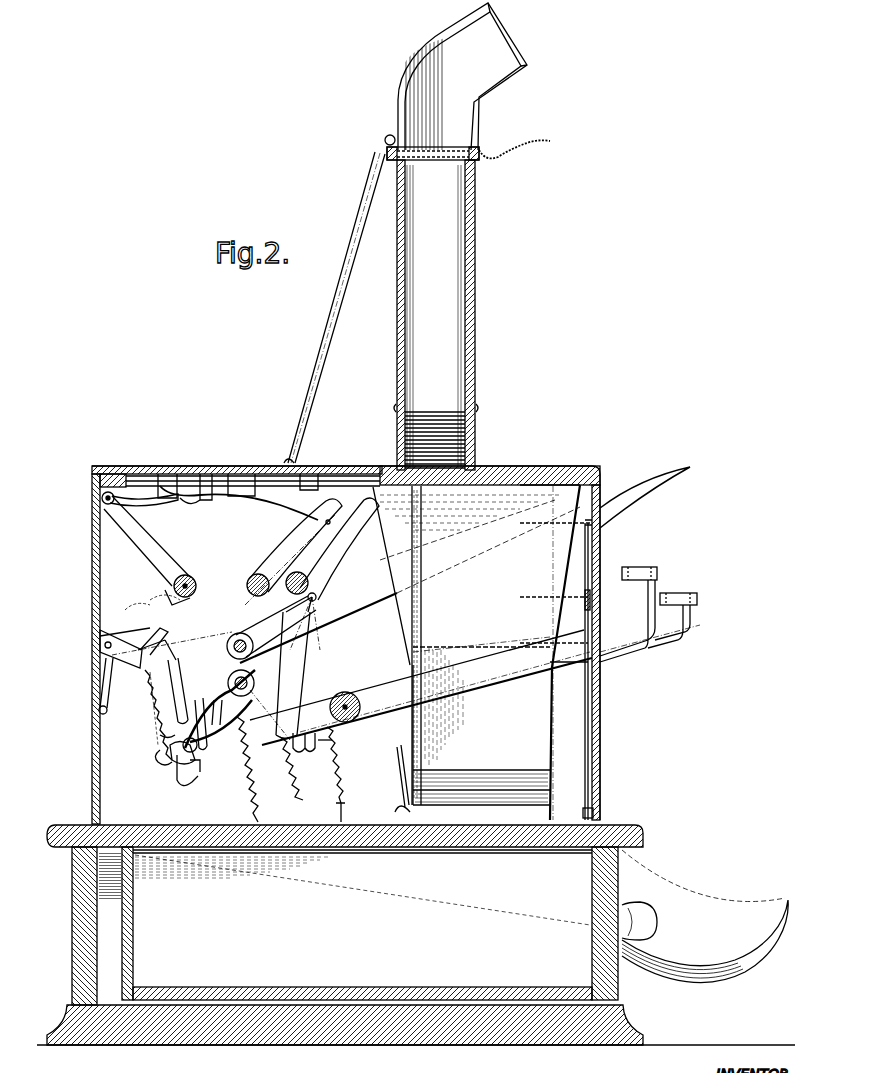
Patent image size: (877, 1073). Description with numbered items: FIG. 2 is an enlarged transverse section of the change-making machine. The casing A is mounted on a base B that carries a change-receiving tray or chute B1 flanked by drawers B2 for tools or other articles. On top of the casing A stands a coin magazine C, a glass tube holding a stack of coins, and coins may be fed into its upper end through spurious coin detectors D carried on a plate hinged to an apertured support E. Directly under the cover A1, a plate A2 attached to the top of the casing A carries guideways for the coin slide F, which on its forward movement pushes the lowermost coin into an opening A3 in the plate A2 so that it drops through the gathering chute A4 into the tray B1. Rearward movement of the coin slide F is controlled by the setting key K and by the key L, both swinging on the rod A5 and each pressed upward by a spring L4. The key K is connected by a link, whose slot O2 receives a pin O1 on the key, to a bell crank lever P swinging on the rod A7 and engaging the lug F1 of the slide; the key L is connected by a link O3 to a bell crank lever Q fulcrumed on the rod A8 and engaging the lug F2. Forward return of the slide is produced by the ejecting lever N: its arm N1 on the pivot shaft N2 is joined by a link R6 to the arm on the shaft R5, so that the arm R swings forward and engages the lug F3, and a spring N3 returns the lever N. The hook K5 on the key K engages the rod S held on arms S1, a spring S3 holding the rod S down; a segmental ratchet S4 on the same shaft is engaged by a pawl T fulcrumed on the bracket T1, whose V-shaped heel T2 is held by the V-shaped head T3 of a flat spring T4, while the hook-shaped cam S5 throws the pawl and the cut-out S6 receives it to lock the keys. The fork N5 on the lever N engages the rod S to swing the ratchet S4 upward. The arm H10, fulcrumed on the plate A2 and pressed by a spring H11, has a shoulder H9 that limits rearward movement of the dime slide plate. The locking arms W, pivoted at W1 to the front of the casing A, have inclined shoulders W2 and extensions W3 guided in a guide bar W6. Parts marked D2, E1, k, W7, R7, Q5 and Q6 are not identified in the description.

The coin magazine C is at (476, 308).
The spurious coin detector D is at (404, 72).
The wire D2 is at (492, 156).
The apertured support E is at (476, 166).
The brace rod E1 is at (364, 195).
The casing A is at (354, 645).
The cover A1 is at (222, 470).
The plate A2 is at (370, 470).
The opening A3 is at (540, 468).
The gathering chute A4 is at (466, 649).
The rod A5 is at (345, 696).
The rod A7 is at (318, 599).
The rod A8 is at (252, 576).
The ejecting lever N is at (660, 480).
The arm N1 is at (205, 640).
The pivot shaft N2 is at (238, 639).
The spring N3 is at (296, 785).
The fork N5 is at (158, 740).
The setting key K is at (612, 654).
The key L is at (668, 642).
The spring L4 is at (342, 790).
The belt k is at (390, 690).
The locking arm W is at (556, 652).
The pivot W1 is at (584, 808).
The inclined shoulder W2 is at (588, 665).
The extension W3 is at (586, 643).
The guide bar W6 is at (562, 594).
The water level W7 is at (575, 548).
The arm R is at (136, 545).
The shaft R5 is at (186, 576).
The link R6 is at (158, 600).
The link R7 is at (128, 620).
The shoulder H9 is at (188, 502).
The arm H10 is at (135, 492).
The spring H11 is at (150, 505).
The coin slide F is at (340, 470).
The lug F1 is at (236, 470).
The lug F2 is at (195, 470).
The lug F3 is at (165, 470).
The bell crank lever Q is at (310, 548).
The link Q5 is at (300, 560).
The roller Q6 is at (312, 576).
The bell crank lever P is at (339, 549).
The rod S is at (180, 760).
The arm S1 is at (218, 740).
The spring S3 is at (256, 790).
The segmental ratchet S4 is at (152, 724).
The hook-shaped cam S5 is at (188, 782).
The cut-out portion S6 is at (196, 695).
The hook K5 is at (157, 760).
The pin O1 is at (292, 738).
The slot O2 is at (333, 742).
The link O3 is at (262, 686).
The pawl T is at (100, 654).
The bracket T1 is at (152, 645).
The V-shaped heel T2 is at (112, 686).
The V-shaped head T3 is at (100, 636).
The flat spring T4 is at (104, 684).
The base B is at (408, 1010).
The change-receiving tray B1 is at (718, 902).
The drawer B2 is at (484, 955).